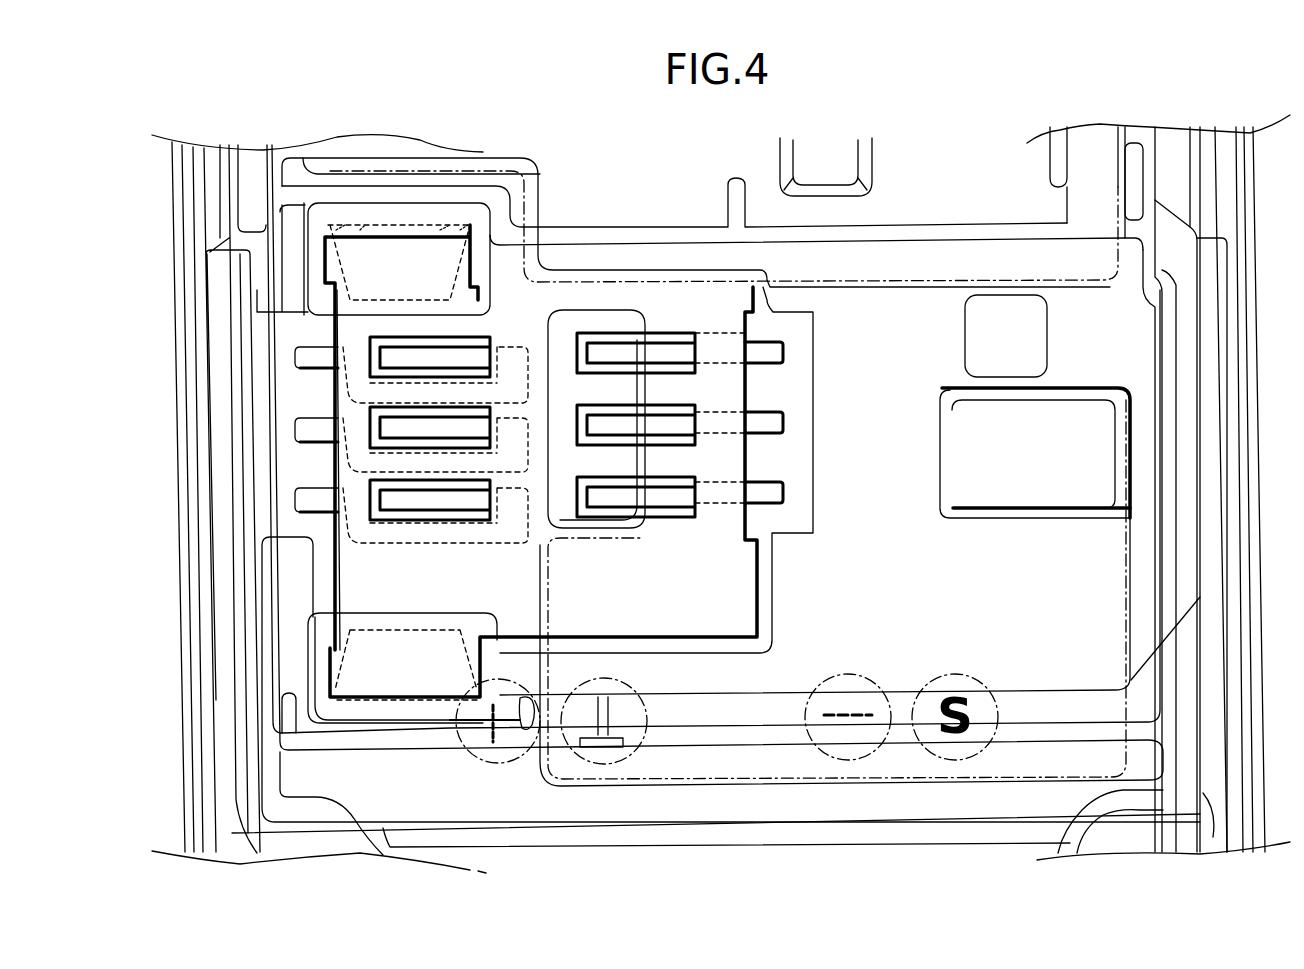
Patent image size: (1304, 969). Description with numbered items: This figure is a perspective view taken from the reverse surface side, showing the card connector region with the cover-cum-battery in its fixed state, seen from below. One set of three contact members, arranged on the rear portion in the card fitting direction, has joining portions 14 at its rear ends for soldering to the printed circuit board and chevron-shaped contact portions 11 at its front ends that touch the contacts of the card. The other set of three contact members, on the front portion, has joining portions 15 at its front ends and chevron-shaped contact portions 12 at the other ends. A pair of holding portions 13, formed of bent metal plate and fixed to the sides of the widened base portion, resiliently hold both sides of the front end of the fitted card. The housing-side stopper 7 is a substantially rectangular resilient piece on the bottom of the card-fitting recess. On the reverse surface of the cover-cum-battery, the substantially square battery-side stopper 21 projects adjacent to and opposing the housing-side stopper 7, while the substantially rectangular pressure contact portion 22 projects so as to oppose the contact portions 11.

The housing-side stopper 7 is at (1078, 410).
The contact portion 11 is at (618, 348).
The contact portion 12 is at (428, 342).
The holding portion 13 is at (378, 248).
The joining portion 14 is at (783, 353).
The joining portion 15 is at (312, 357).
The battery-side stopper 21 is at (1010, 312).
The pressure contact portion 22 is at (568, 323).